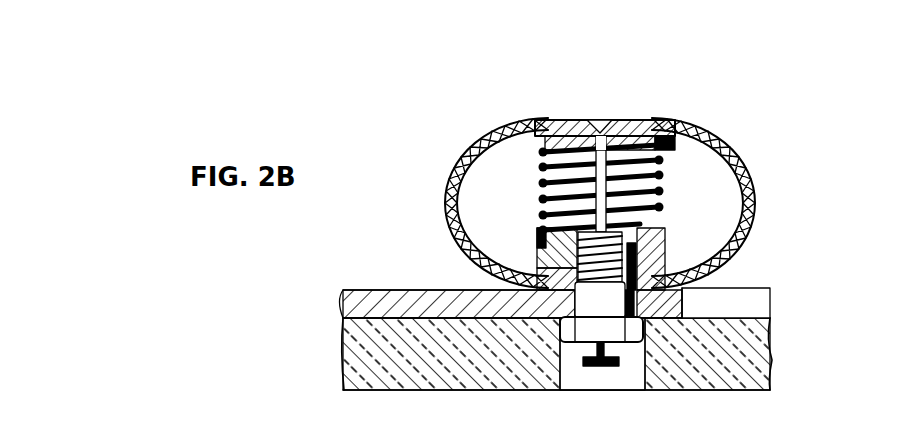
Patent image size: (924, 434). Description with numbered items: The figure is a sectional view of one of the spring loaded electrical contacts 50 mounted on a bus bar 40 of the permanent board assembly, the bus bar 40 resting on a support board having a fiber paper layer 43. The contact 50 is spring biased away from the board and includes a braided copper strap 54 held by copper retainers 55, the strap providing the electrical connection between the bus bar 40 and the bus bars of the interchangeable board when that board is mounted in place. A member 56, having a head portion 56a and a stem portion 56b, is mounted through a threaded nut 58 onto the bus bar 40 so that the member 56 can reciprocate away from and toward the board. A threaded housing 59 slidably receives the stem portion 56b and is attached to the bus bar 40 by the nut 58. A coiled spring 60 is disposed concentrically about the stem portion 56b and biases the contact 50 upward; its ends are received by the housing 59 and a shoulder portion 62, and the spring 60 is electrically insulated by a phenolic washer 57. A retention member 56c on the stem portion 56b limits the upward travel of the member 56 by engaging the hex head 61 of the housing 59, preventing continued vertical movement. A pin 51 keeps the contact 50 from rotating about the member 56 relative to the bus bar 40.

The bus bar 40 is at (365, 292).
The fiber paper layer 43 is at (357, 320).
The spring loaded electrical contact 50 is at (822, 125).
The pin 51 is at (735, 263).
The braided copper strap 54 is at (757, 212).
The copper retainer 55 is at (548, 124).
The member 56 is at (546, 170).
The head portion 56a is at (603, 120).
The stem portion 56b is at (546, 200).
The retention member 56c is at (604, 366).
The phenolic washer 57 is at (626, 128).
The threaded nut 58 is at (468, 243).
The threaded housing 59 is at (530, 266).
The coiled spring 60 is at (662, 178).
The hex head 61 is at (567, 343).
The shoulder portion 62 is at (673, 142).